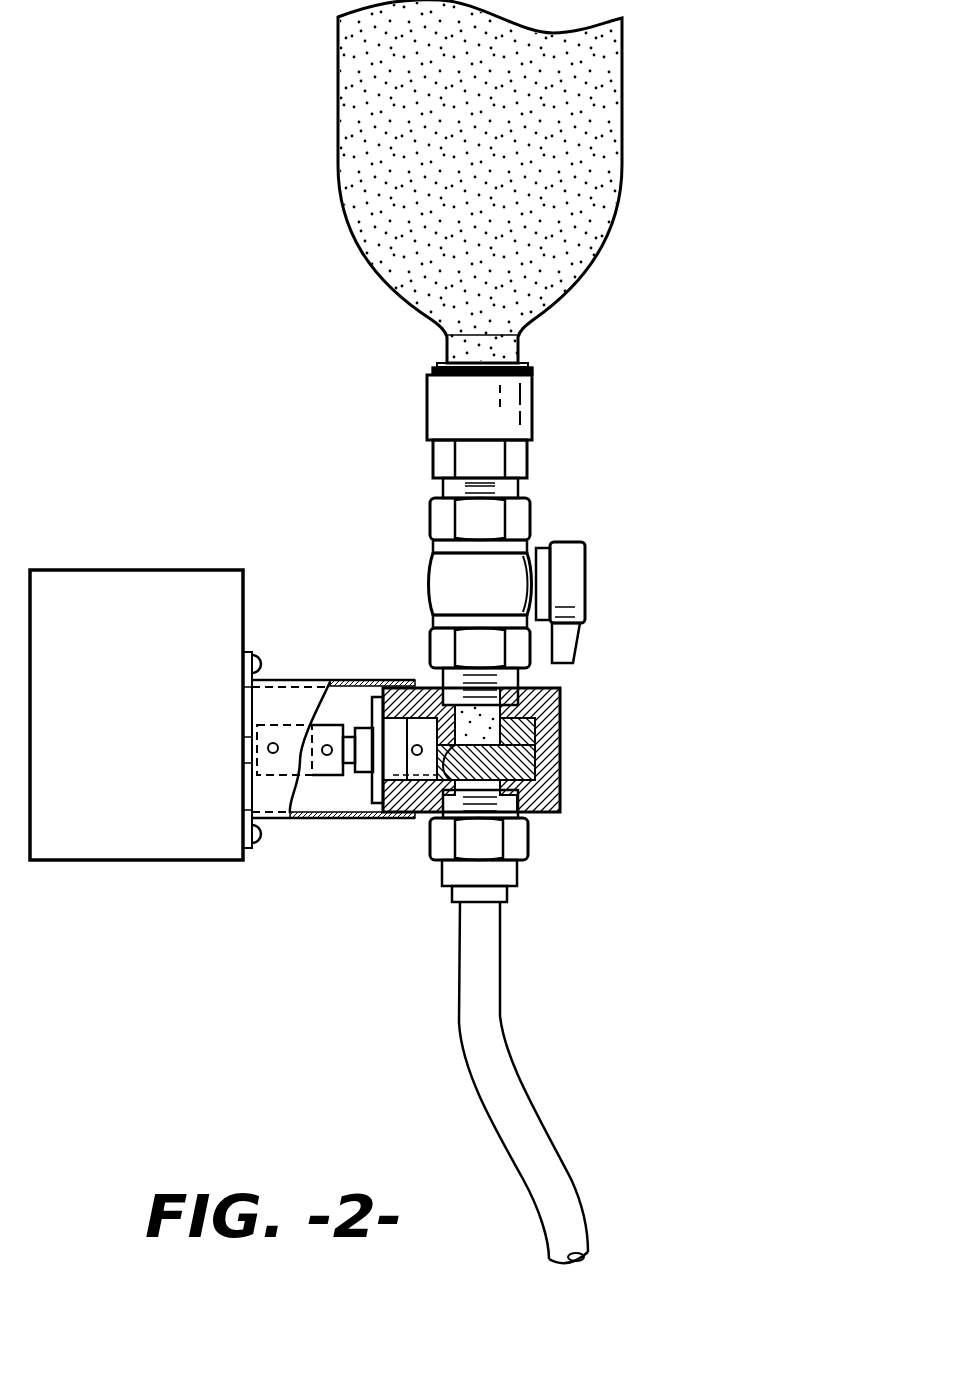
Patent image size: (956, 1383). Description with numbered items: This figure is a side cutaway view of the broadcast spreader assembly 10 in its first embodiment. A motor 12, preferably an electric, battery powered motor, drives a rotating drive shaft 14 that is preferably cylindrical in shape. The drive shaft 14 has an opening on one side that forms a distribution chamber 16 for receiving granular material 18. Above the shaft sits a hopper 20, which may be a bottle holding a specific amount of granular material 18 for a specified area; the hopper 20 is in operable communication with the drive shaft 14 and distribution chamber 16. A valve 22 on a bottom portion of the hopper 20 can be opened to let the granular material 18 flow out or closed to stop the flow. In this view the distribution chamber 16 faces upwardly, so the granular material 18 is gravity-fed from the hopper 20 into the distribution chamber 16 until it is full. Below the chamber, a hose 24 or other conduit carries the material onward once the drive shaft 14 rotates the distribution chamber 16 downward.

The broadcast spreader assembly 10 is at (603, 416).
The motor 12 is at (135, 568).
The drive shaft 14 is at (295, 733).
The distribution chamber 16 is at (557, 760).
The granular material 18 is at (567, 230).
The hopper 20 is at (622, 142).
The valve 22 is at (585, 568).
The hose 24 is at (485, 1047).